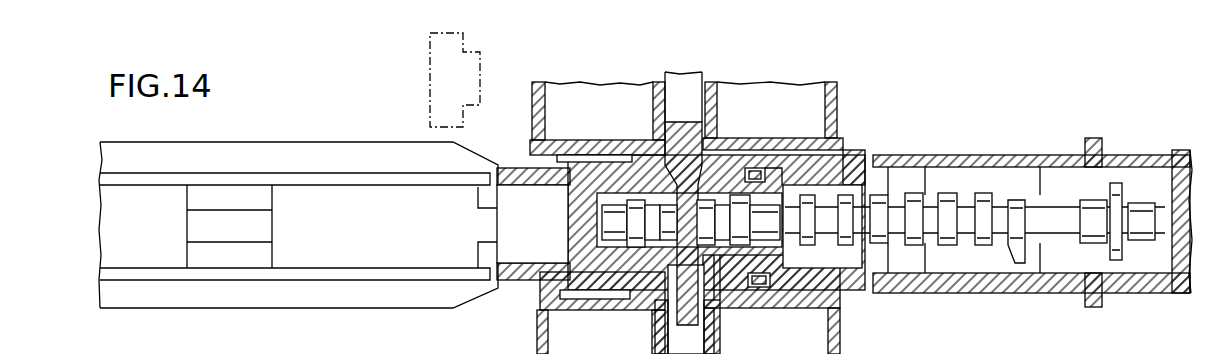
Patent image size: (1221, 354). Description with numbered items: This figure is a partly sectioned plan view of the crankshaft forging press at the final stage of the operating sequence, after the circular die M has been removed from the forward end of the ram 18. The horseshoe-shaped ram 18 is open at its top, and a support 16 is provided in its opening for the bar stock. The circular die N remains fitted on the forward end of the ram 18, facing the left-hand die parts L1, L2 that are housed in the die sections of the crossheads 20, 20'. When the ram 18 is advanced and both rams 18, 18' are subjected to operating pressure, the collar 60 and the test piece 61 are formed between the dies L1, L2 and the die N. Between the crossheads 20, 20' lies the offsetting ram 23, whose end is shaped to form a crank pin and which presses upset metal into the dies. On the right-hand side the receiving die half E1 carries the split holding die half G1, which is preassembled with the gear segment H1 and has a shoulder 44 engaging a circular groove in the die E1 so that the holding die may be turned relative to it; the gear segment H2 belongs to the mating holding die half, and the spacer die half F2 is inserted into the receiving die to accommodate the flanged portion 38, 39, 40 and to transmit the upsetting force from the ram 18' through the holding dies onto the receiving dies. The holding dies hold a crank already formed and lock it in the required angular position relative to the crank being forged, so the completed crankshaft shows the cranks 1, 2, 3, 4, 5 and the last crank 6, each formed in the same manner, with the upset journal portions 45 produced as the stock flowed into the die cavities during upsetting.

The ram 18 is at (298, 211).
The support 16 is at (250, 258).
The circular die M is at (443, 75).
The circular die N is at (516, 166).
The die part L1 is at (578, 158).
The die part L2 is at (595, 285).
The test piece 61 is at (614, 212).
The collar 60 is at (636, 212).
The last crank 6 is at (670, 237).
The offsetting ram 23 is at (690, 84).
The crosshead 20 is at (795, 101).
The crosshead 20' is at (793, 304).
The shoulder 44 is at (735, 178).
The gear segment H1 is at (758, 168).
The die half E1 is at (768, 172).
The split die half G1 is at (822, 163).
The crank 5 is at (822, 226).
The crank 4 is at (826, 212).
The gear segment H2 is at (753, 290).
The split die half F2 is at (722, 290).
The ram 18' is at (1032, 214).
The crank 3 is at (897, 208).
The crank 2 is at (962, 208).
The upset journal portion 45 is at (997, 210).
The crank 1 is at (1035, 250).
The flanged portion 38 is at (1096, 215).
The flanged portion 39 is at (1116, 195).
The flanged portion 40 is at (1145, 226).